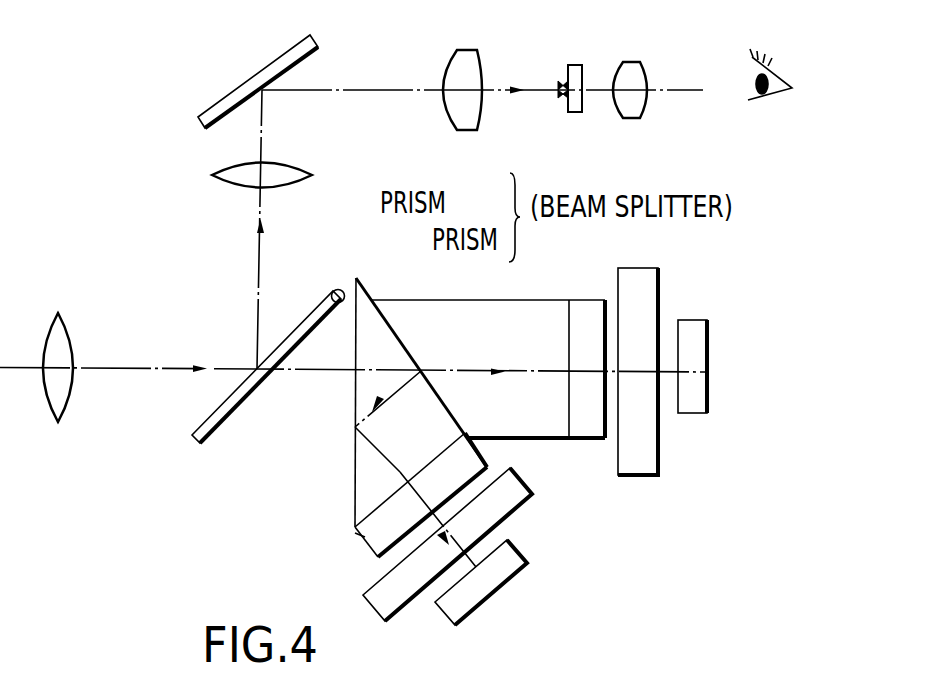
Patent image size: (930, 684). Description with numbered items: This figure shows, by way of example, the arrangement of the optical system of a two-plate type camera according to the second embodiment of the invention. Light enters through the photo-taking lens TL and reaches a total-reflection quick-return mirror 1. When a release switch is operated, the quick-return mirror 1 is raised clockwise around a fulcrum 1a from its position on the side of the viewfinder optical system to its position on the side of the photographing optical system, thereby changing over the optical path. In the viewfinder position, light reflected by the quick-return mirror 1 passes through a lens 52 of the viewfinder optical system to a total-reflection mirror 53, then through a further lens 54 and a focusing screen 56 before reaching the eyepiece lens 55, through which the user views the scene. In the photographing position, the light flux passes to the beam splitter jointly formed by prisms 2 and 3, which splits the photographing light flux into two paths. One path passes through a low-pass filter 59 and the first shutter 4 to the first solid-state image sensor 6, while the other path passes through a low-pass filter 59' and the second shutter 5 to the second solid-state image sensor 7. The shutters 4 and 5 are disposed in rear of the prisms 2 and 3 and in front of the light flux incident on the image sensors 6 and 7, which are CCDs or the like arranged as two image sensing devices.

The photo-taking lens TL is at (70, 336).
The quick-return mirror 1 is at (222, 422).
The fulcrum 1a is at (335, 288).
The prism 2 is at (385, 328).
The prism 3 is at (445, 300).
The low-pass filter 59 is at (567, 346).
The low-pass filter 59' is at (331, 552).
The first shutter 4 is at (644, 268).
The first solid-state image sensor 6 is at (694, 321).
The second shutter 5 is at (531, 486).
The second solid-state image sensor 7 is at (520, 570).
The lens 52 is at (233, 186).
The total-reflection mirror 53 is at (273, 62).
The lens 54 is at (463, 48).
The eyepiece lens 55 is at (628, 62).
The focusing screen 56 is at (572, 65).